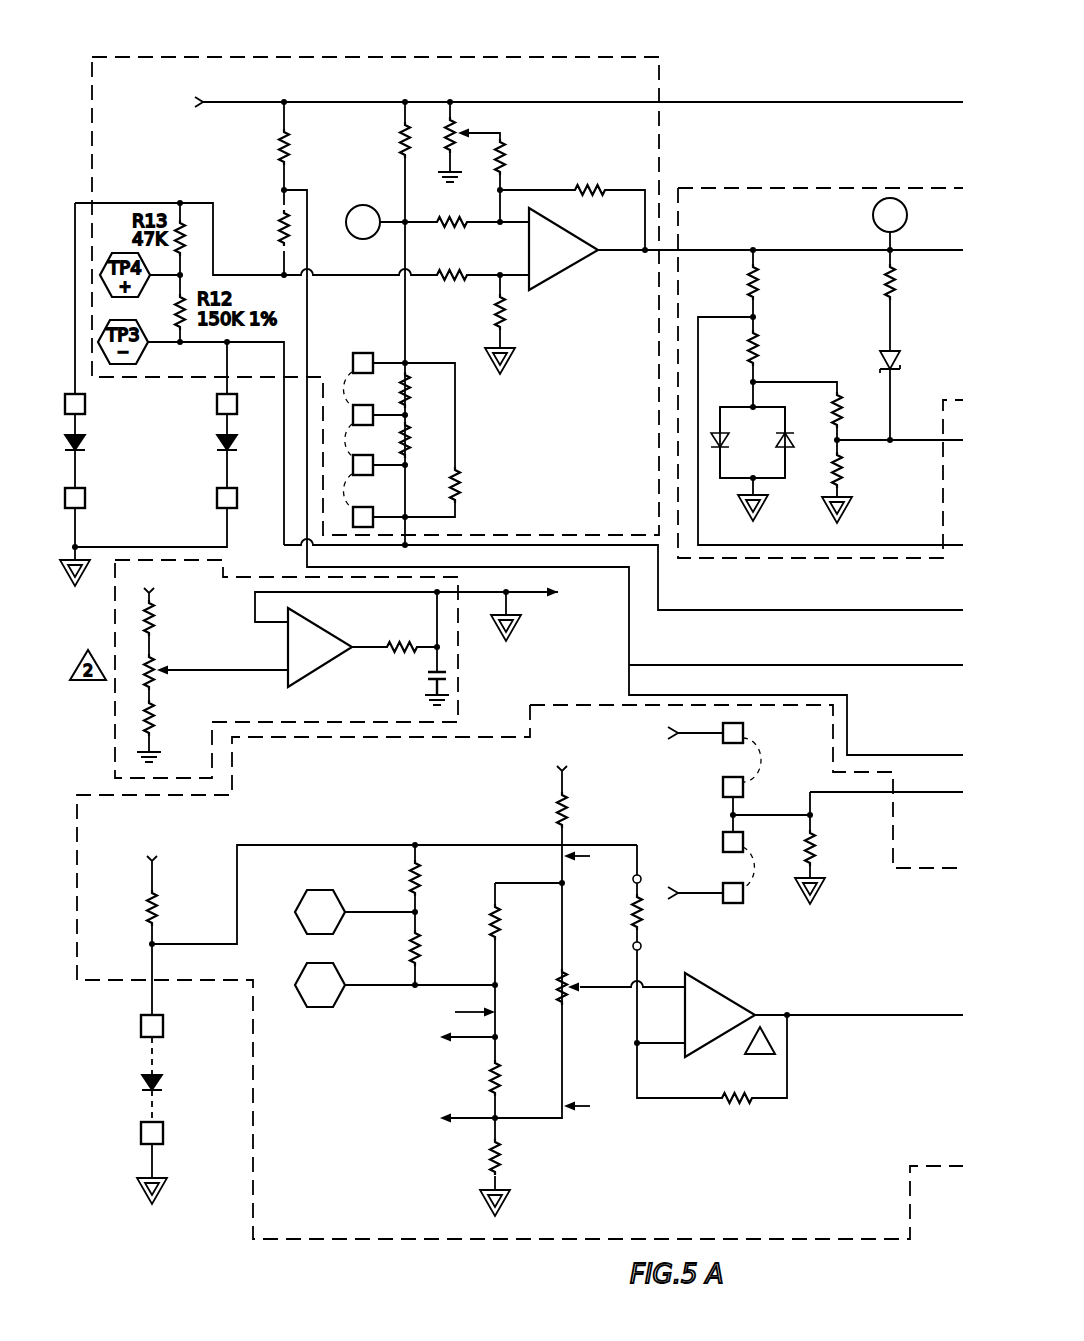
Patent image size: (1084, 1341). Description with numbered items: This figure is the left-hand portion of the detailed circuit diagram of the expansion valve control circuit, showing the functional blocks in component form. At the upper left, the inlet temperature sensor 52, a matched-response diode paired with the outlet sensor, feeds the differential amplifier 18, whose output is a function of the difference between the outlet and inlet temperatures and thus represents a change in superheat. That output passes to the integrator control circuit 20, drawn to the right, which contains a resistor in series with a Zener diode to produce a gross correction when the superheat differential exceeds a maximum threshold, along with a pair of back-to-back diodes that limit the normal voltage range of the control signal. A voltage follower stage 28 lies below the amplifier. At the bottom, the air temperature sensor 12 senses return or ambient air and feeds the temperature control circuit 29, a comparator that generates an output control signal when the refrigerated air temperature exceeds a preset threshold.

The differential amplifier 18 is at (566, 56).
The integrator control circuit 20 is at (905, 188).
The inlet temperature sensor 52 is at (88, 438).
The air temperature sensor 12 is at (141, 1086).
The voltage follower section 28 is at (458, 690).
The temperature control circuit 29 is at (253, 1185).